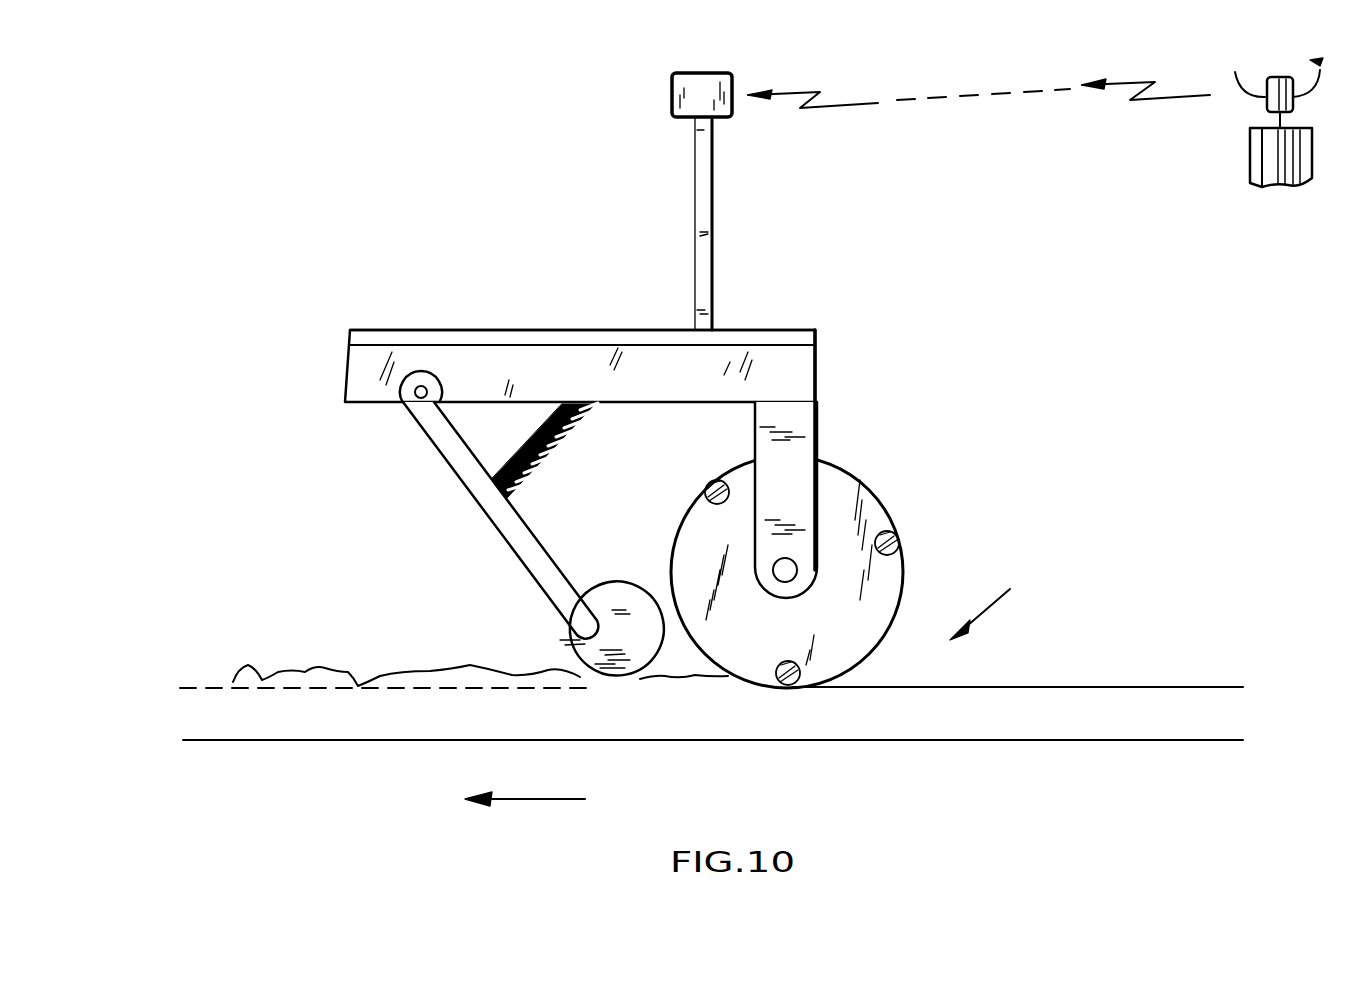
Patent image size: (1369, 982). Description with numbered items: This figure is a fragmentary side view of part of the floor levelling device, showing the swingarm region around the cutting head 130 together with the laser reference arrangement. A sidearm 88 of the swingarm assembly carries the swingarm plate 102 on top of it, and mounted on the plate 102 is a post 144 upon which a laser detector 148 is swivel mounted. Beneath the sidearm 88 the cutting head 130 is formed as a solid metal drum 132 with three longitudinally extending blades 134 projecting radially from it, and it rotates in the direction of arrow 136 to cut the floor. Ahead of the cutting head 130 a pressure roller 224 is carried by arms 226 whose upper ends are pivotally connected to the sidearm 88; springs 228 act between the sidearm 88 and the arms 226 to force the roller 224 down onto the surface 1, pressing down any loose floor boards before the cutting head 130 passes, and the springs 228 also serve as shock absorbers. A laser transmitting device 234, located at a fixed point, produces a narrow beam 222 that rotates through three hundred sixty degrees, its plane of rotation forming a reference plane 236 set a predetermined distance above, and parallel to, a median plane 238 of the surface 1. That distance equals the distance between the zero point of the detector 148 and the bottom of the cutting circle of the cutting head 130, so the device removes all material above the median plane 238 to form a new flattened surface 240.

The surface 1 is at (328, 669).
The sidearm 88 is at (556, 347).
The swingarm plate 102 is at (408, 332).
The cutting head 130 is at (948, 523).
The drum 132 is at (864, 480).
The blades 134 is at (707, 492).
The arrow 136 is at (992, 607).
The post 144 is at (695, 270).
The laser detector 148 is at (672, 95).
The beam 222 is at (822, 108).
The pressure roller 224 is at (619, 585).
The arms 226 is at (487, 517).
The springs 228 is at (593, 418).
The laser transmitting device 234 is at (1250, 160).
The reference plane 236 is at (951, 100).
The median plane 238 is at (200, 687).
The flattened surface 240 is at (1183, 685).